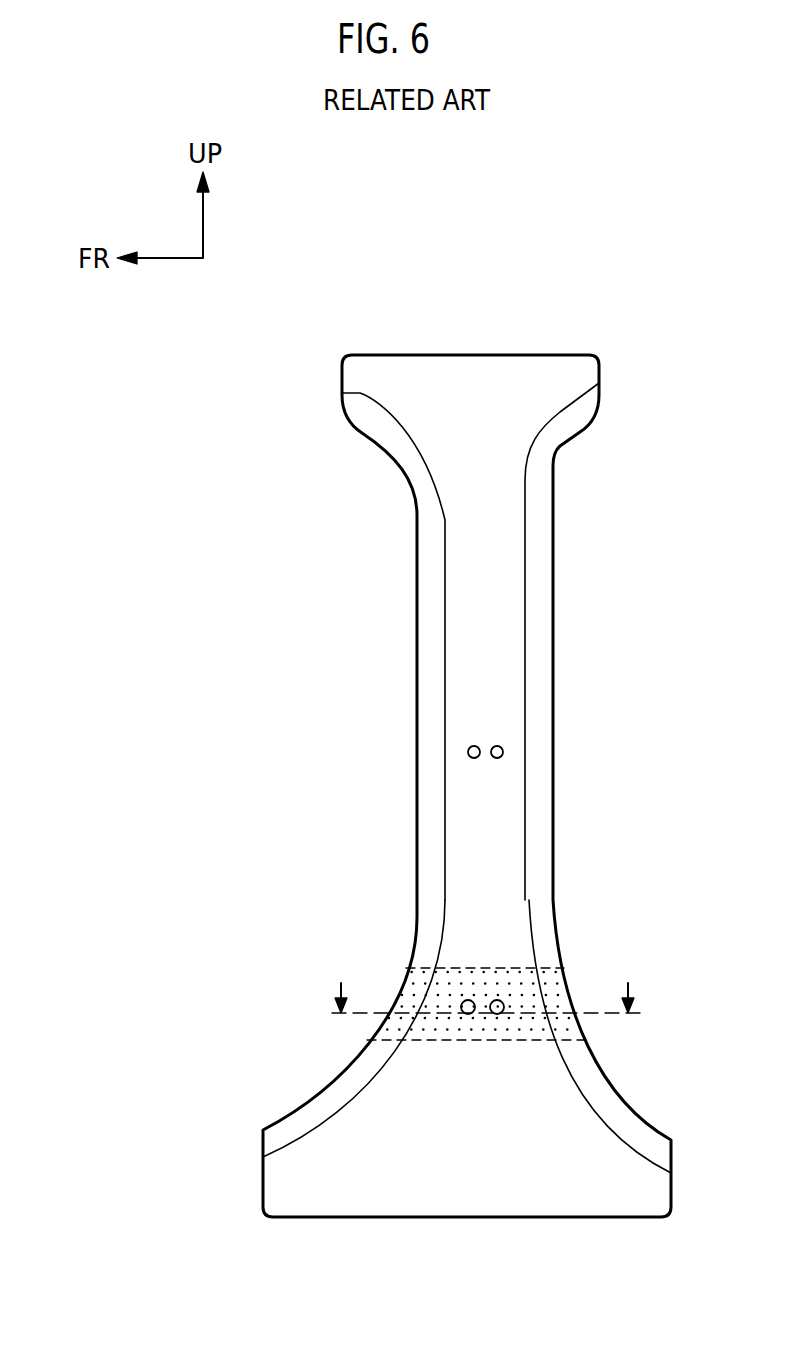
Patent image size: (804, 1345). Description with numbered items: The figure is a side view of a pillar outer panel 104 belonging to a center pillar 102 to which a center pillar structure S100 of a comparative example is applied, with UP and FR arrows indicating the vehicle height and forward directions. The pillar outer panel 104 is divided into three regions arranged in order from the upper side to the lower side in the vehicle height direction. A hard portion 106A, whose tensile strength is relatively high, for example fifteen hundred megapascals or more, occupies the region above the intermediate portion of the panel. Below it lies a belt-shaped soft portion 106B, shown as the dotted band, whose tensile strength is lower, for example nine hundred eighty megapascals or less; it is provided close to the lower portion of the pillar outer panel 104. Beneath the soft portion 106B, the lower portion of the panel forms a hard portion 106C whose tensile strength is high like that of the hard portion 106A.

The center pillar 102 is at (484, 786).
The pillar outer panel 104 is at (562, 622).
The hard portion 106A is at (503, 694).
The soft portion 106B is at (523, 1003).
The hard portion 106C is at (547, 1112).
The center pillar structure S100 is at (587, 940).